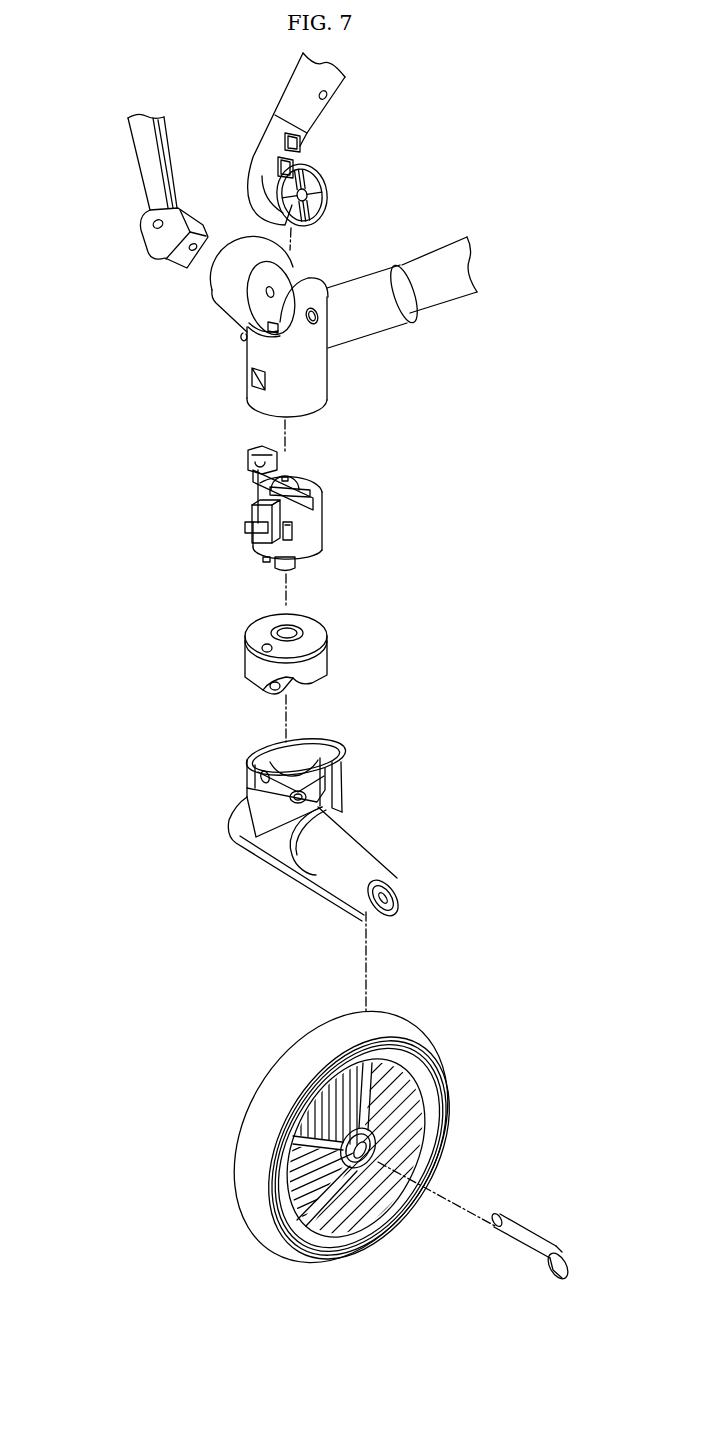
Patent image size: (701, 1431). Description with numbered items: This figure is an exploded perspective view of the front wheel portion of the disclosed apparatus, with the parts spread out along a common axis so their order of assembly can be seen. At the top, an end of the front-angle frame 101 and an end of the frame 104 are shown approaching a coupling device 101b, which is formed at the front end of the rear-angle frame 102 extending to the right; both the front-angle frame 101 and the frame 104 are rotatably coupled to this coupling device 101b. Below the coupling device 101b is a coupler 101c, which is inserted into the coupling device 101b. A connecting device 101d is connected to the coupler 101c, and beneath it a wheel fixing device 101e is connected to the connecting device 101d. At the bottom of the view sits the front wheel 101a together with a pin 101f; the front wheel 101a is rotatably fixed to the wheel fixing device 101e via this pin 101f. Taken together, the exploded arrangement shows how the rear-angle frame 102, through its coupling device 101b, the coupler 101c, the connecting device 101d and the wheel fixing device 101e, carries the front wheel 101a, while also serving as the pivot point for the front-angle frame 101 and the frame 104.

The front-angle frame 101 is at (310, 108).
The front wheel 101a is at (430, 1045).
The coupling device 101b is at (254, 353).
The coupler 101c is at (310, 528).
The connecting device 101d is at (322, 657).
The wheel fixing device 101e is at (362, 853).
The pin 101f is at (535, 1247).
The rear-angle frame 102 is at (434, 292).
The frame 104 is at (150, 166).